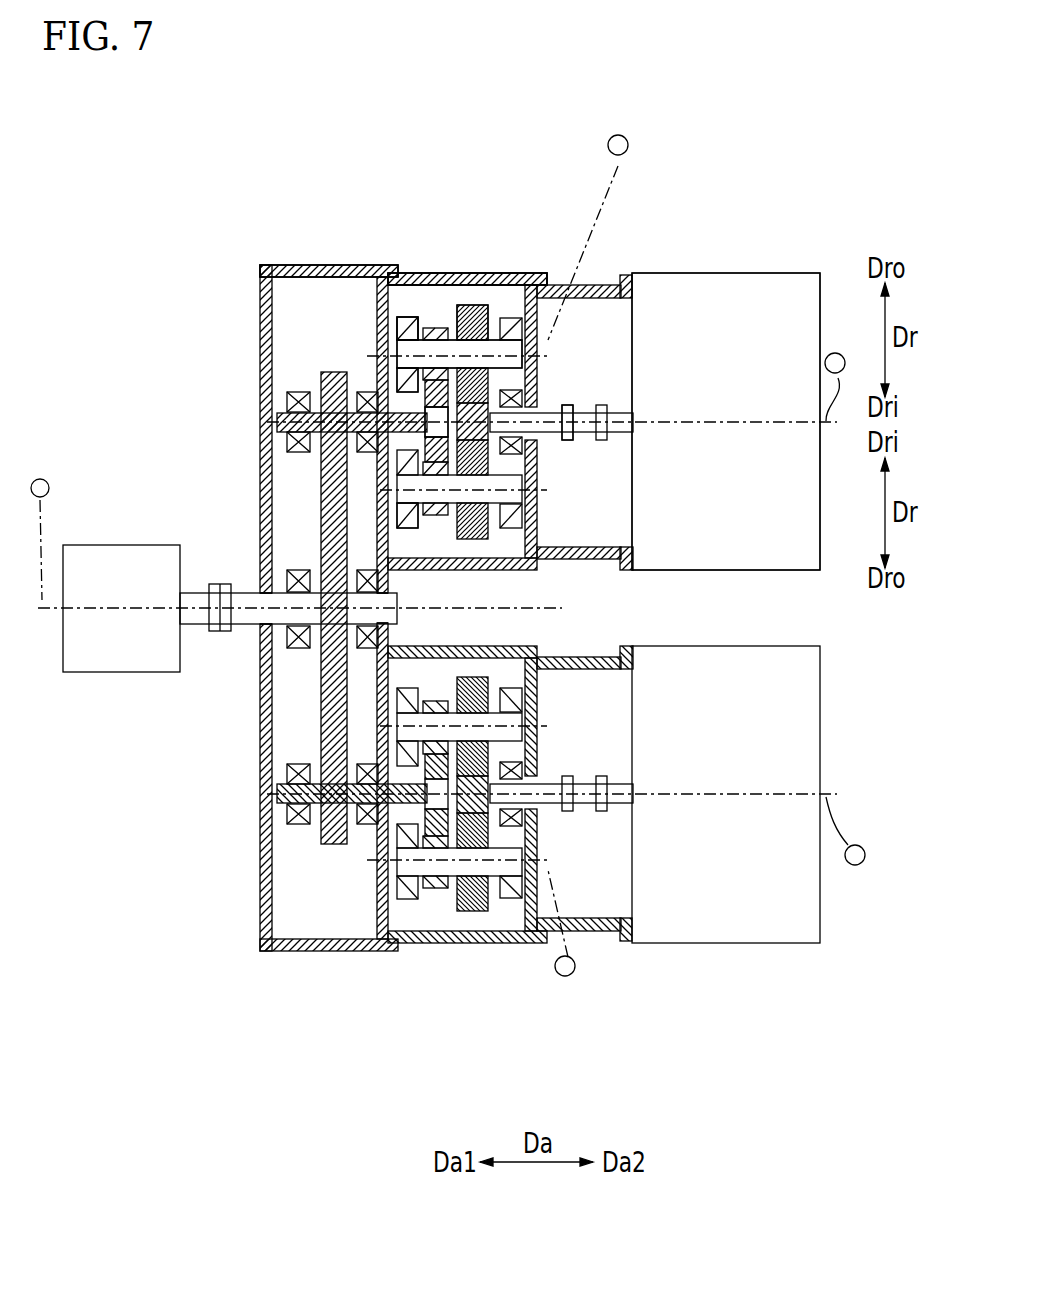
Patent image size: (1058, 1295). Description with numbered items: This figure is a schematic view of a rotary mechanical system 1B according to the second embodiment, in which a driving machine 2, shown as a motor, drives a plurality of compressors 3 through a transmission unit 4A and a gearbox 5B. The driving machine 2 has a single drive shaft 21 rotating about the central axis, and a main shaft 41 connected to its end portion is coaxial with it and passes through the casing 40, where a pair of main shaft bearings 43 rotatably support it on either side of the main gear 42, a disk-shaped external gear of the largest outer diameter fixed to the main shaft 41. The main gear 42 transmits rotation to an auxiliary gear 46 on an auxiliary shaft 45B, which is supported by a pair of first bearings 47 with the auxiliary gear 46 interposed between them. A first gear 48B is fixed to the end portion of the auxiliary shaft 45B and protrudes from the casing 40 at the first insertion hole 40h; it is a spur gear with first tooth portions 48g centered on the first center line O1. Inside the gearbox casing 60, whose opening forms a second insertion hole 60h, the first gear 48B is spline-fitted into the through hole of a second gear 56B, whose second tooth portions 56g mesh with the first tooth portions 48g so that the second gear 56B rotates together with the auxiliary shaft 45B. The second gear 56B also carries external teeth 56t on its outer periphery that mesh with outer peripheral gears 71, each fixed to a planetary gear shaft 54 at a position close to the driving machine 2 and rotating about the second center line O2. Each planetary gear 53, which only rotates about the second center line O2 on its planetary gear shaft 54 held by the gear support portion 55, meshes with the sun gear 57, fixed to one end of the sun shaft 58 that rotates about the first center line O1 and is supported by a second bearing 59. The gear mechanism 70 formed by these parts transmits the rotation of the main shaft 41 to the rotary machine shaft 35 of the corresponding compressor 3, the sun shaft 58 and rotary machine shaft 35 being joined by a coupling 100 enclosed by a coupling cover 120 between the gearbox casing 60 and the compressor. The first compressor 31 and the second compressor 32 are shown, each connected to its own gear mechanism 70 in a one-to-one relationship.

The rotary mechanical system 1B is at (698, 186).
The driving machine 2 is at (68, 535).
The drive shaft 21 is at (185, 620).
The compressor 3 is at (726, 421).
The first compressor 31 is at (800, 260).
The second compressor 32 is at (800, 960).
The rotary machine shaft 35 is at (628, 285).
The transmission unit 4A is at (290, 255).
The casing 40 is at (268, 282).
The first insertion hole 40h is at (355, 952).
The main shaft 41 is at (240, 588).
The main gear 42 is at (322, 525).
The main shaft bearing 43 is at (360, 642).
The auxiliary shaft 45B is at (298, 398).
The auxiliary gear 46 is at (397, 383).
The first bearing 47 is at (345, 428).
The first gear 48B is at (405, 368).
The first tooth portion 48g is at (430, 447).
The gearbox 5B is at (520, 260).
The planetary gear 53 is at (522, 330).
The planetary gear shaft 54 is at (448, 332).
The gear support portion 55 is at (400, 282).
The second gear 56B is at (362, 274).
The second tooth portion 56g is at (292, 432).
The external teeth 56t is at (458, 338).
The sun gear 57 is at (468, 532).
The sun shaft 58 is at (547, 450).
The second bearing 59 is at (548, 415).
The gearbox casing 60 is at (499, 260).
The second insertion hole 60h is at (388, 596).
The gear mechanism 70 is at (441, 290).
The outer peripheral gear 71 is at (410, 317).
The coupling 100 is at (578, 437).
The coupling cover 120 is at (606, 276).
The first center line O1 is at (855, 609).
The second center line O2 is at (506, 556).